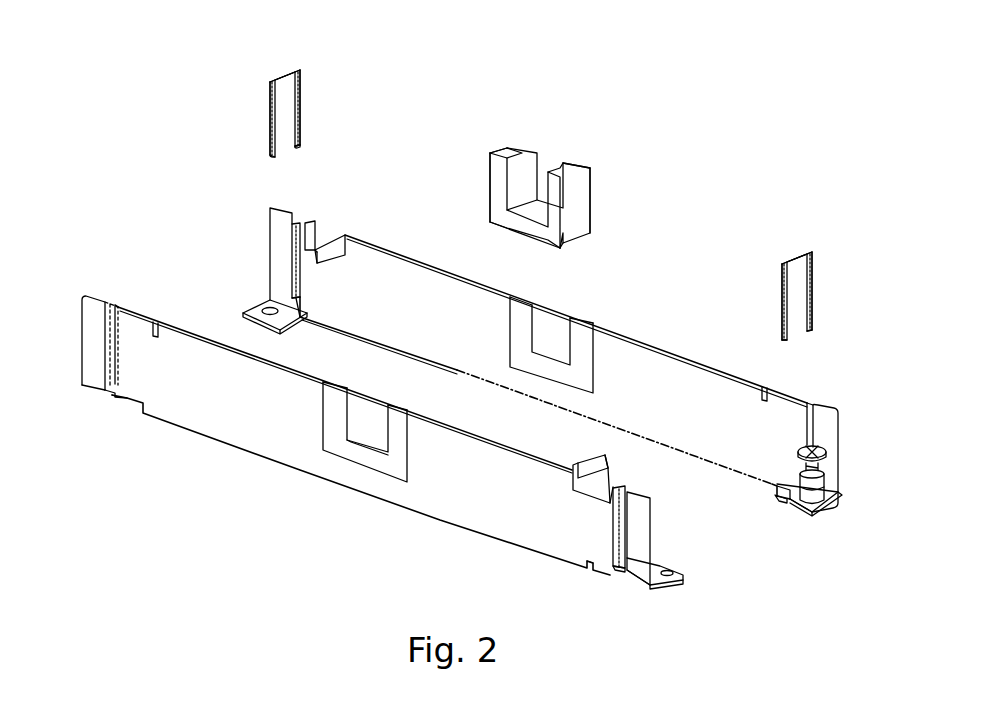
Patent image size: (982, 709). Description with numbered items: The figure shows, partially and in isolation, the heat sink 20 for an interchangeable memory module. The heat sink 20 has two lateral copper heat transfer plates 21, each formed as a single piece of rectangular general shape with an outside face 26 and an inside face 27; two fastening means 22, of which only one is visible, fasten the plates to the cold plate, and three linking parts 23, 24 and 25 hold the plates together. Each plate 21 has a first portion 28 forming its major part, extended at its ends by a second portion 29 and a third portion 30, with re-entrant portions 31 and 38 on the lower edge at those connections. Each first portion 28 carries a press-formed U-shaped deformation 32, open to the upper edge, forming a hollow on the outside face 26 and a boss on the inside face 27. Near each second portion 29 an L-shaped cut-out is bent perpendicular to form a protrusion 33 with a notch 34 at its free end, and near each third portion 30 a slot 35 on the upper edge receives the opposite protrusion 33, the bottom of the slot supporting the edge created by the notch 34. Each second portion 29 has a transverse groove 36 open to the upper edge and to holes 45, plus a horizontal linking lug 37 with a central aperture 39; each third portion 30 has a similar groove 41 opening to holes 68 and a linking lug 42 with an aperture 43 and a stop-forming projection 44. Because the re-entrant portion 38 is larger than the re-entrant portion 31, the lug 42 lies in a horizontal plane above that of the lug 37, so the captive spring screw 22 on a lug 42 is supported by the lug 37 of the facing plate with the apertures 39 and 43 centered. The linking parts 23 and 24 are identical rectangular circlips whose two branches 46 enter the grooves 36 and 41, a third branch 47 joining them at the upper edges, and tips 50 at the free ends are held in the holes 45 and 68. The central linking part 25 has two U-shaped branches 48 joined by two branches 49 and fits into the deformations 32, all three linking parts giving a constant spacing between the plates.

The heat sink 20 is at (152, 180).
The heat transfer plate 21 is at (397, 240).
The fastening means 22 is at (830, 480).
The linking part 23 is at (300, 70).
The linking part 24 is at (812, 254).
The linking part 25 is at (573, 168).
The outside face 26 is at (676, 345).
The inside face 27 is at (460, 426).
The first portion 28 is at (433, 324).
The second portion 29 is at (280, 230).
The third portion 30 is at (90, 318).
The re-entrant portion 31 is at (325, 323).
The deformation 32 is at (396, 404).
The protrusion 33 is at (330, 250).
The notch 34 is at (318, 264).
The slot 35 is at (156, 322).
The groove 36 is at (298, 222).
The linking lug 37 is at (256, 316).
The re-entrant portion 38 is at (140, 412).
The aperture 39 is at (266, 307).
The groove 41 is at (113, 314).
The linking lug 42 is at (88, 393).
The aperture 43 is at (805, 514).
The stop-forming projection 44 is at (785, 503).
The hole 45 is at (300, 320).
The branch 46 is at (270, 116).
The branch 47 is at (283, 72).
The U-shaped branch 48 is at (490, 185).
The branch 49 is at (503, 150).
The tip 50 is at (272, 158).
The hole 68 is at (108, 397).